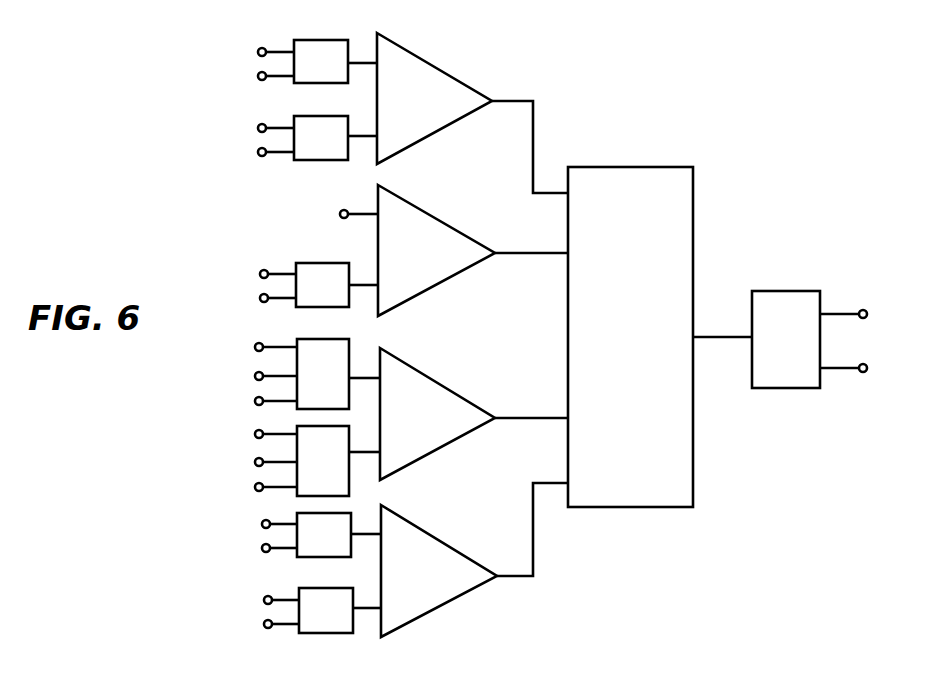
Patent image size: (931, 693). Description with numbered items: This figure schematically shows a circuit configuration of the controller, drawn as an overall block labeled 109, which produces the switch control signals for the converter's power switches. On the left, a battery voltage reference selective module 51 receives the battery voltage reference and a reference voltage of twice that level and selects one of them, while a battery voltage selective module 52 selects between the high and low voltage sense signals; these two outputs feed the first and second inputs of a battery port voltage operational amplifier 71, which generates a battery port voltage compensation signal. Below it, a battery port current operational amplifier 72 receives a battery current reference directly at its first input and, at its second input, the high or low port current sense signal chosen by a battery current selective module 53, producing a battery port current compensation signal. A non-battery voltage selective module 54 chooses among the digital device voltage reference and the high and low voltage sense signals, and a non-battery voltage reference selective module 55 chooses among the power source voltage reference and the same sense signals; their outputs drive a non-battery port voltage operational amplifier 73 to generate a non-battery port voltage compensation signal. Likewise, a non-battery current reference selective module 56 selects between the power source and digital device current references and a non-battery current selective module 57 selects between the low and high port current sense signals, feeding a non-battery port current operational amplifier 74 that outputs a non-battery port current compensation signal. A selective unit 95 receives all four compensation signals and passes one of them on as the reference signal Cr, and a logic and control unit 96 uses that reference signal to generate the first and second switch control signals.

The battery voltage reference selective module 51 is at (276, 69).
The battery voltage selective module 52 is at (287, 142).
The battery current selective module 53 is at (294, 287).
The non-battery voltage selective module 54 is at (285, 374).
The non-battery voltage reference selective module 55 is at (285, 460).
The non-battery current reference selective module 56 is at (294, 538).
The non-battery current selective module 57 is at (298, 612).
The battery port voltage operational amplifier 71 is at (458, 113).
The battery port current operational amplifier 72 is at (443, 250).
The non-battery port voltage operational amplifier 73 is at (458, 414).
The non-battery port current operational amplifier 74 is at (459, 560).
The selective unit 95 is at (660, 337).
The logic and control unit 96 is at (809, 339).
The control circuit 109 is at (822, 85).